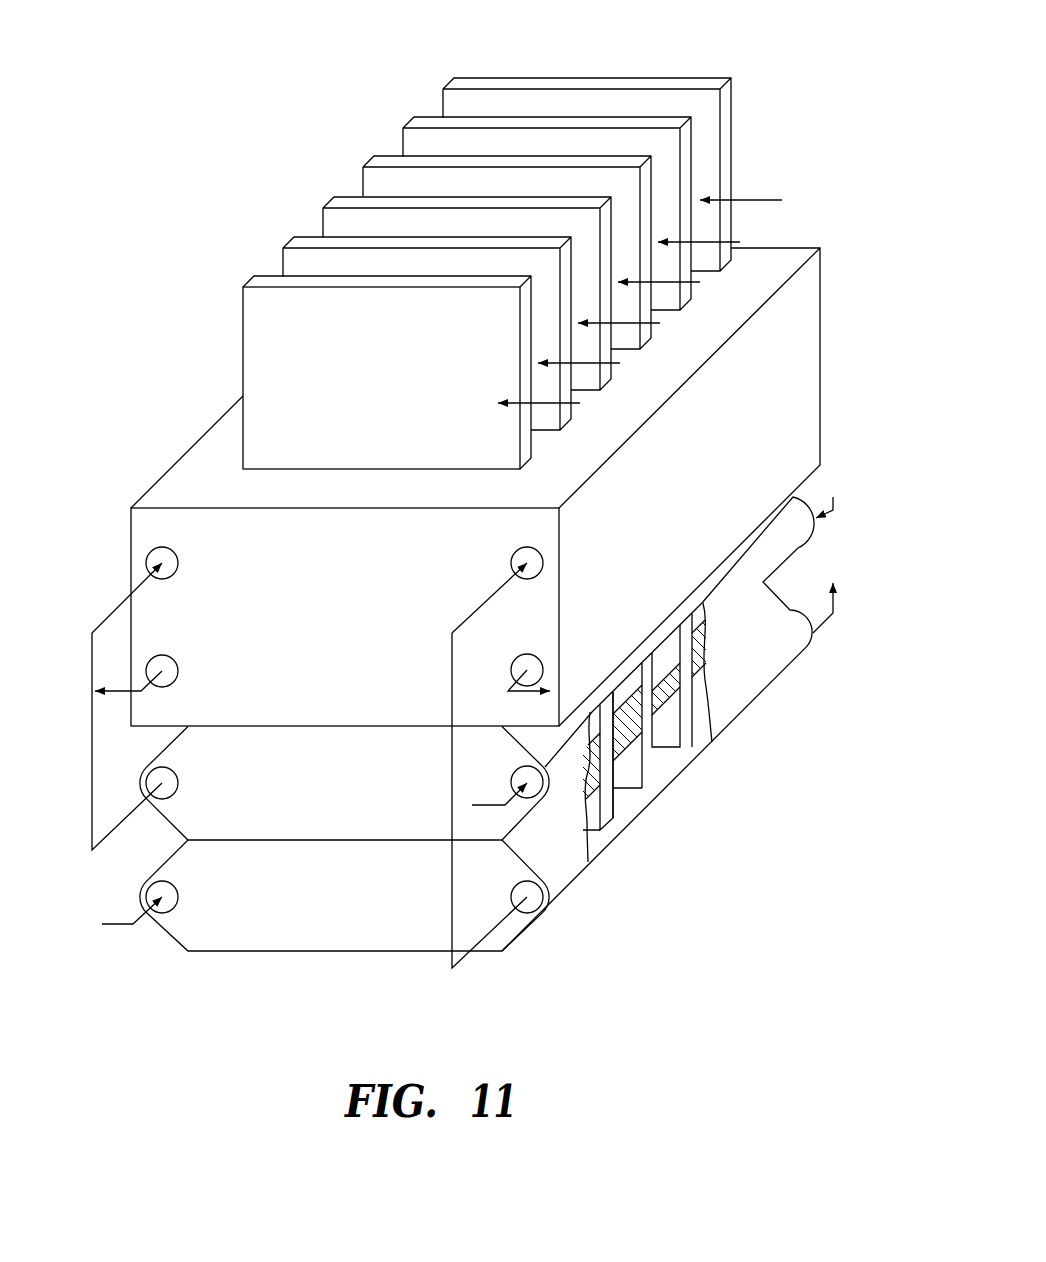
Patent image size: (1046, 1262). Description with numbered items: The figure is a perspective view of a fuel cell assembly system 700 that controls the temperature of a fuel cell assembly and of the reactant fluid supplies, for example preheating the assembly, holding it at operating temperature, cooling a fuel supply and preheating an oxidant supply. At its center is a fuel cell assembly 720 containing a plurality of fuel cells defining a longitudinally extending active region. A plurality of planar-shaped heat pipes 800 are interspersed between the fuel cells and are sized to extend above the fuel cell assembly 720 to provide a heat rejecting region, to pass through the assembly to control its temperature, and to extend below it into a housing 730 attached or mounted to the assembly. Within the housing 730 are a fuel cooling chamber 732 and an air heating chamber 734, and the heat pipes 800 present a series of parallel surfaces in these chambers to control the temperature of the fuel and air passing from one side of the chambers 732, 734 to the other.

The fuel cell assembly system 700 is at (284, 43).
The heat pipes 800 is at (532, 119).
The fuel cell assembly 720 is at (127, 525).
The housing 730 is at (152, 855).
The fuel cooling chamber 732 is at (620, 767).
The air heating chamber 734 is at (620, 688).